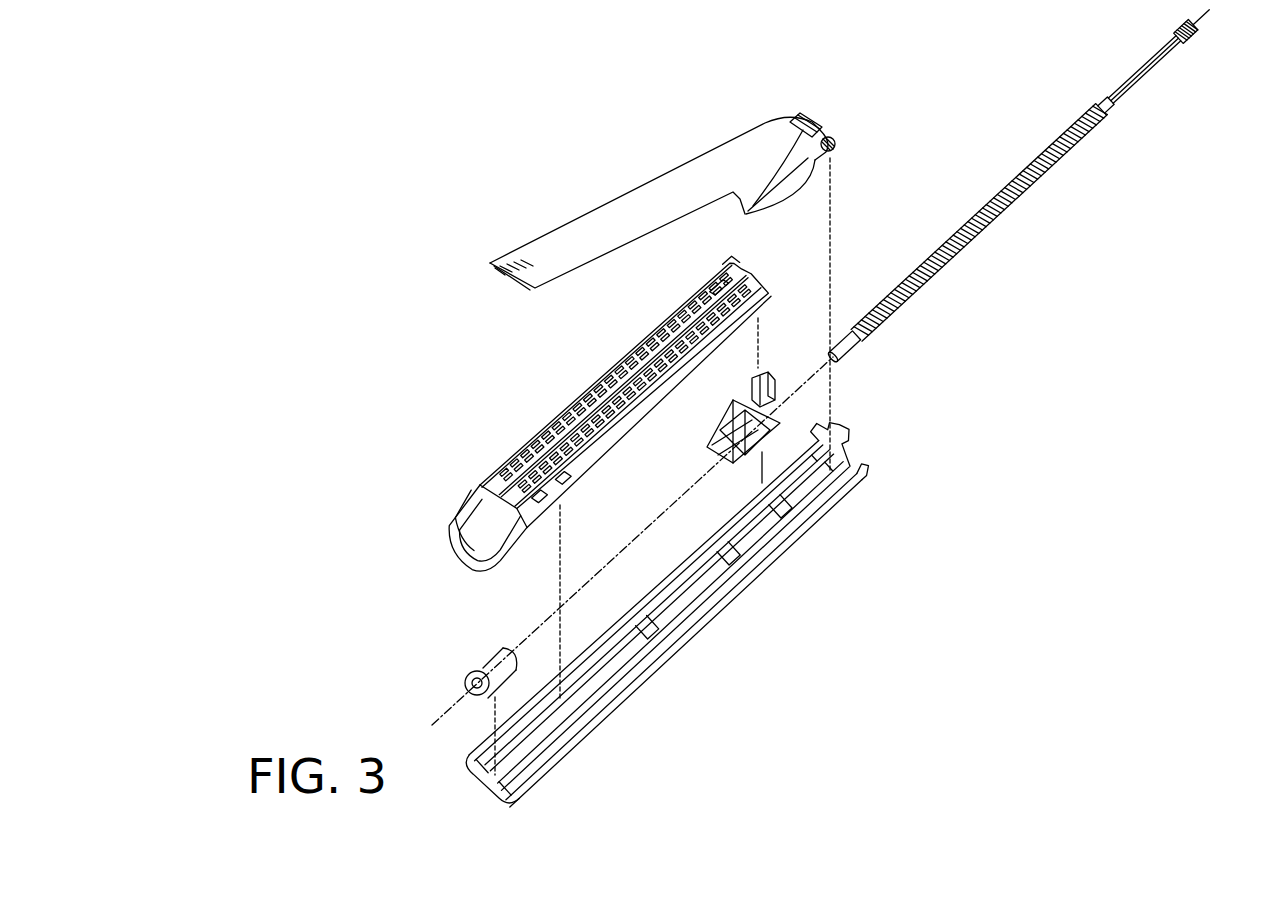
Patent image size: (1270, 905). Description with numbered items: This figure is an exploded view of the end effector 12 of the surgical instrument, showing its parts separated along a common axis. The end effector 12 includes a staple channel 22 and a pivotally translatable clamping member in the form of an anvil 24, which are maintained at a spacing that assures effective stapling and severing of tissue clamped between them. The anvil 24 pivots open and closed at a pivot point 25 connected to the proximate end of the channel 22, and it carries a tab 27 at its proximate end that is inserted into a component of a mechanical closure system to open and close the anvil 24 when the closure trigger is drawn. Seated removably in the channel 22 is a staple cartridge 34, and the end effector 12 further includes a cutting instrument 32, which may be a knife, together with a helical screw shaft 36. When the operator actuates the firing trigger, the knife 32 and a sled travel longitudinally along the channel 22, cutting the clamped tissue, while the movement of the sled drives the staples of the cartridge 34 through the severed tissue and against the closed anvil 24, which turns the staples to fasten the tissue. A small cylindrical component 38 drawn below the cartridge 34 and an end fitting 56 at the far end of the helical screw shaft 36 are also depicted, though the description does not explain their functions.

The end effector 12 is at (380, 95).
The staple channel 22 is at (758, 570).
The anvil 24 is at (530, 256).
The pivot point 25 is at (836, 147).
The tab 27 is at (806, 113).
The cutting instrument 32 is at (771, 418).
The staple cartridge 34 is at (487, 482).
The helical screw shaft 36 is at (975, 244).
The pin 38 is at (481, 661).
The coupling 56 is at (1196, 34).